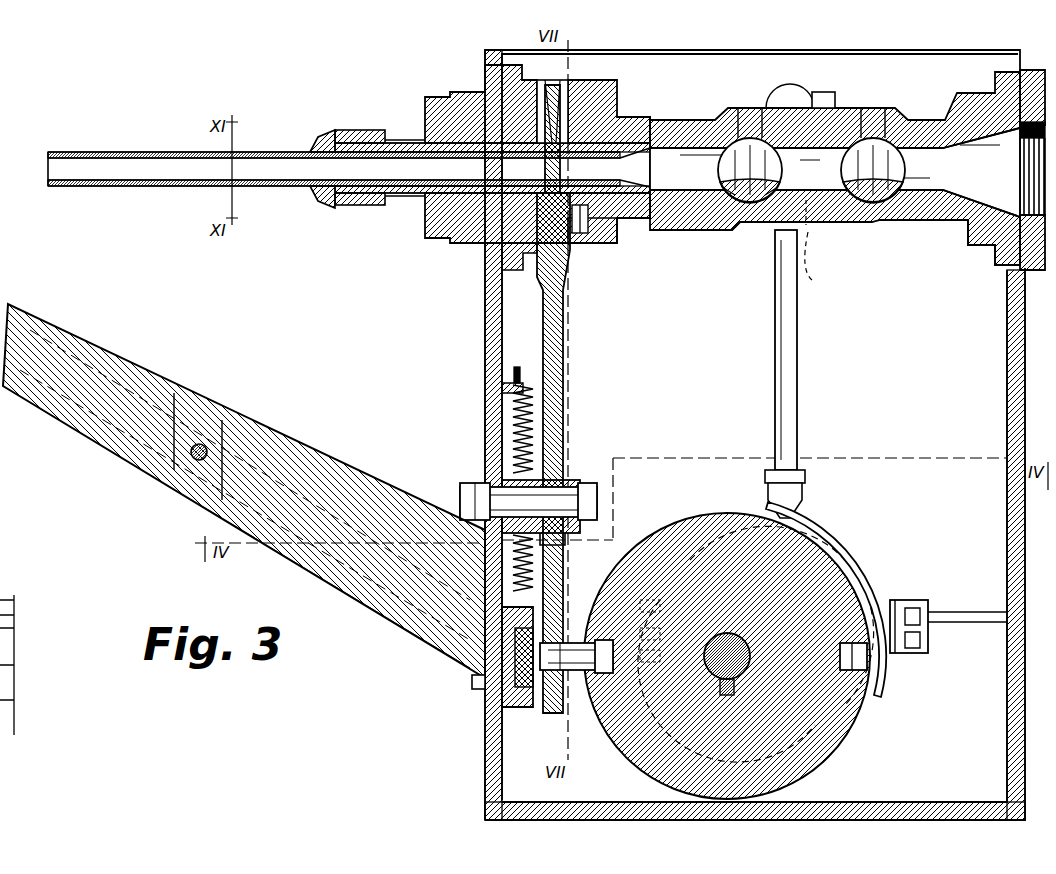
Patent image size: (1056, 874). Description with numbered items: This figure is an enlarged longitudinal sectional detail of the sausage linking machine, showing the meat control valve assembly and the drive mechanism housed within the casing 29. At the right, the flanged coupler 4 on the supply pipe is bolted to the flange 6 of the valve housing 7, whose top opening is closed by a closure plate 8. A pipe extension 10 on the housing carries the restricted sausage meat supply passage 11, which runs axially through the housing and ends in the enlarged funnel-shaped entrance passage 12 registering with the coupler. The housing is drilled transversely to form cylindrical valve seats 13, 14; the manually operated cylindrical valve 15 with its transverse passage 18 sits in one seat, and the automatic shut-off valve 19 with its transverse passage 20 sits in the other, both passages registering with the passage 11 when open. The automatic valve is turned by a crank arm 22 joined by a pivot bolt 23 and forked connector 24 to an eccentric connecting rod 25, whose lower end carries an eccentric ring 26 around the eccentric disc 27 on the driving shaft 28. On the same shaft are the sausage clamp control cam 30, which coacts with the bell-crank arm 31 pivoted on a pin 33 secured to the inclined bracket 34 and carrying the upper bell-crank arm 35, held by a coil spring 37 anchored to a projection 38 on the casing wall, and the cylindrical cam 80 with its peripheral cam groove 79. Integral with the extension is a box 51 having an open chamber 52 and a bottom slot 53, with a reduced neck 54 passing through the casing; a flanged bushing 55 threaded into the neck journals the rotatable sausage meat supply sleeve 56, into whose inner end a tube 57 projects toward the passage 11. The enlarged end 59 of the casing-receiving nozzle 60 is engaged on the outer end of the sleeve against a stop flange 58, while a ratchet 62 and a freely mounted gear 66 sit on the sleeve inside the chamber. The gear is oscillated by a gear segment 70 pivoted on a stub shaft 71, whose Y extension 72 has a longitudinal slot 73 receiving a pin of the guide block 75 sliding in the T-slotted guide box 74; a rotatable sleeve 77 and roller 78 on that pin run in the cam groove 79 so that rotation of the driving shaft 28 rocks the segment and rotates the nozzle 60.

The flanged coupler 4 is at (1015, 268).
The flange 6 is at (995, 250).
The valve housing 7 is at (878, 224).
The closure plate 8 is at (722, 120).
The pipe extension 10 is at (672, 230).
The sausage meat supply passage 11 is at (660, 148).
The funnel-shaped entrance passage 12 is at (970, 130).
The valve seat 13 is at (752, 140).
The valve seat 14 is at (890, 140).
The cylindrical valve 15 is at (740, 202).
The transverse passage 18 is at (762, 200).
The shut-off valve 19 is at (862, 202).
The transverse passage 20 is at (875, 138).
The crank arm 22 is at (826, 86).
The pivot bolt 23 is at (790, 104).
The forked connector 24 is at (810, 262).
The eccentric connecting rod 25 is at (798, 388).
The eccentric ring 26 is at (860, 560).
The eccentric disc 27 is at (836, 528).
The driving shaft 28 is at (826, 728).
The casing 29 is at (1010, 712).
The sausage clamp control cam 30 is at (712, 516).
The bell-crank arm 31 is at (372, 590).
The pin 33 is at (190, 460).
The inclined bracket 34 is at (330, 566).
The upper bell-crank arm 35 is at (102, 370).
The coil spring 37 is at (535, 418).
The projection 38 is at (518, 366).
The box 51 is at (610, 244).
The chamber 52 is at (618, 84).
The slot 53 is at (582, 240).
The reduced neck 54 is at (466, 92).
The flanged bushing 55 is at (428, 235).
The sausage meat supply sleeve 56 is at (412, 195).
The tube 57 is at (420, 140).
The stop flange 58 is at (368, 130).
The enlarged end 59 is at (330, 133).
The sausage casing-receiving nozzle 60 is at (170, 132).
The ratchet 62 is at (620, 115).
The gear 66 is at (548, 110).
The gear segment 70 is at (547, 220).
The stub shaft 71 is at (560, 482).
The Y extension 72 is at (562, 540).
The longitudinal slot 73 is at (558, 560).
The T-slotted guide box 74 is at (508, 706).
The guide block 75 is at (484, 706).
The rotatable sleeve 77 is at (568, 690).
The roller 78 is at (602, 600).
The cam groove 79 is at (862, 684).
The cylindrical cam 80 is at (830, 604).